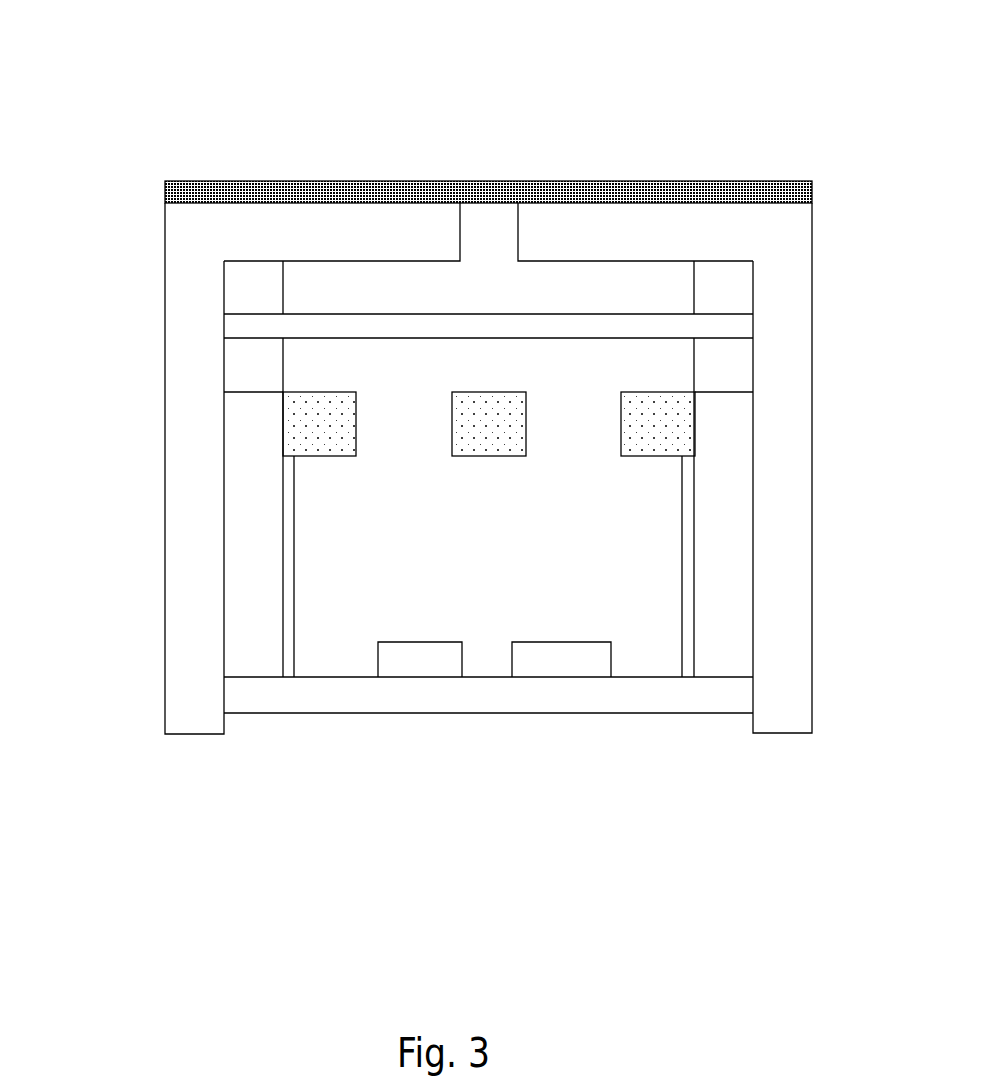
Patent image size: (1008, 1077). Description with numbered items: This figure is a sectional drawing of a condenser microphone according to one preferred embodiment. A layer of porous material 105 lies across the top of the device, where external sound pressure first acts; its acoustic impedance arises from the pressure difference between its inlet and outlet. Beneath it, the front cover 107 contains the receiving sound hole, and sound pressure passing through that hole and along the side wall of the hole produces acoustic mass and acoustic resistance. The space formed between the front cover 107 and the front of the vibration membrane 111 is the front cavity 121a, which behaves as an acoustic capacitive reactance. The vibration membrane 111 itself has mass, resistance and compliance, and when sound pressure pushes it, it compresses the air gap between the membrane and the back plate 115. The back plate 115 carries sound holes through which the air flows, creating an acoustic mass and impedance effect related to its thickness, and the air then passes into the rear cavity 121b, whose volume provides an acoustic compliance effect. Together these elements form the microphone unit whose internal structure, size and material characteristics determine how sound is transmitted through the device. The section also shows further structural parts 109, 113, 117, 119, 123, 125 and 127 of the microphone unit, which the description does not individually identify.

The porous material 105 is at (687, 188).
The front cover 107 is at (783, 702).
The upper spacer 109 is at (735, 287).
The vibration membrane 111 is at (235, 328).
The lower spacer 113 is at (738, 366).
The back plate 115 is at (486, 440).
The inner wall 117 is at (252, 670).
The thin liner 119 is at (289, 672).
The front cavity 121a is at (308, 289).
The rear cavity 121b is at (318, 563).
The first bottom electrode 123 is at (414, 672).
The second bottom electrode 125 is at (598, 672).
The bottom layer 127 is at (533, 700).